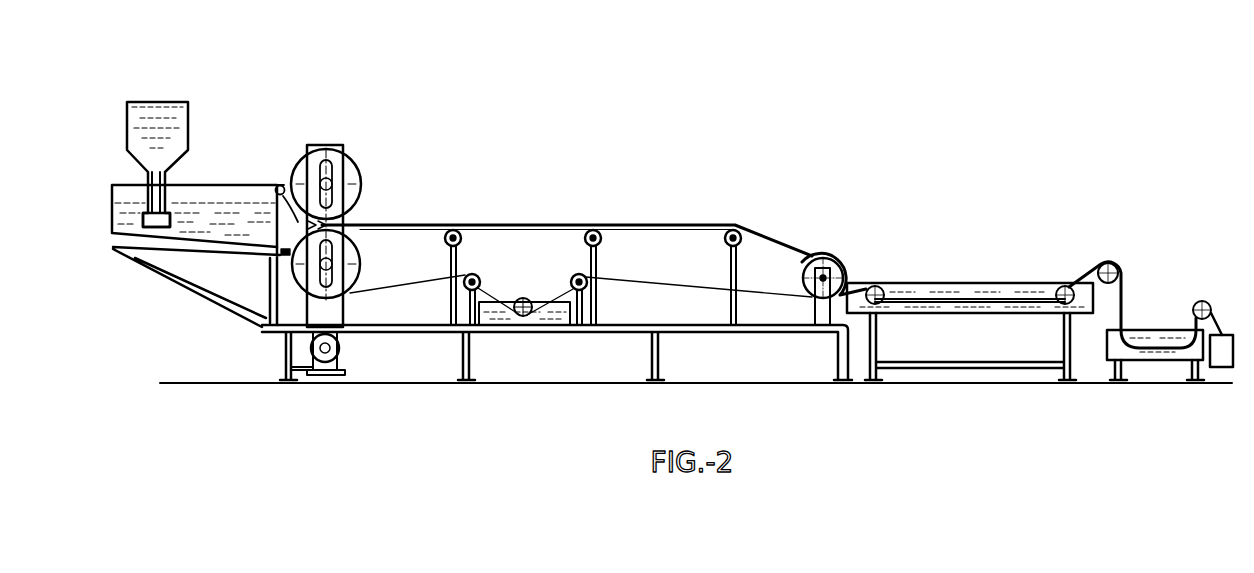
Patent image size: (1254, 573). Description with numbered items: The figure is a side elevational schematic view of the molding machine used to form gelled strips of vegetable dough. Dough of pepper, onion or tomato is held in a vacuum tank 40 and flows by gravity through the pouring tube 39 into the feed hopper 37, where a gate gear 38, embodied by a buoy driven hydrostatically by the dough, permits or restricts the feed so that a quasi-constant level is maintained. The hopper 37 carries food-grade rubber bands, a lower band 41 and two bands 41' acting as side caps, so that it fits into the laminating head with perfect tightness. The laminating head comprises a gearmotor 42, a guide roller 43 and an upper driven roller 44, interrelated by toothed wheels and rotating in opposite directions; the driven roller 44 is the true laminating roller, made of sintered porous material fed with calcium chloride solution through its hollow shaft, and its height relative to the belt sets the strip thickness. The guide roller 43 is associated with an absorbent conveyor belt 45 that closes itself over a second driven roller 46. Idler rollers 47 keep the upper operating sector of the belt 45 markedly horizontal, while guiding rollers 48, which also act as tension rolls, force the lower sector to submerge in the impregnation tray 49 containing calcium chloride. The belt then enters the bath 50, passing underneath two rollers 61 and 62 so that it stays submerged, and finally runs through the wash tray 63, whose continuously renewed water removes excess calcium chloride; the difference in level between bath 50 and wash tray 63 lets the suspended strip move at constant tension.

The feed hopper 37 is at (119, 183).
The gate gear 38 is at (150, 228).
The pouring tube 39 is at (165, 200).
The vacuum tank 40 is at (190, 110).
The lower band 41 is at (185, 307).
The side cap bands 41' is at (289, 143).
The gearmotor 42 is at (327, 353).
The guide roller 43 is at (355, 245).
The driven roller 44 is at (352, 178).
The conveyor belt 45 is at (402, 226).
The second driven roller 46 is at (822, 256).
The idler rollers 47 is at (470, 272).
The guiding rollers 48 is at (480, 270).
The impregnation tray 49 is at (545, 320).
The bath 50 is at (920, 283).
The roller 61 is at (876, 286).
The roller 62 is at (1065, 286).
The wash tray 63 is at (1150, 360).